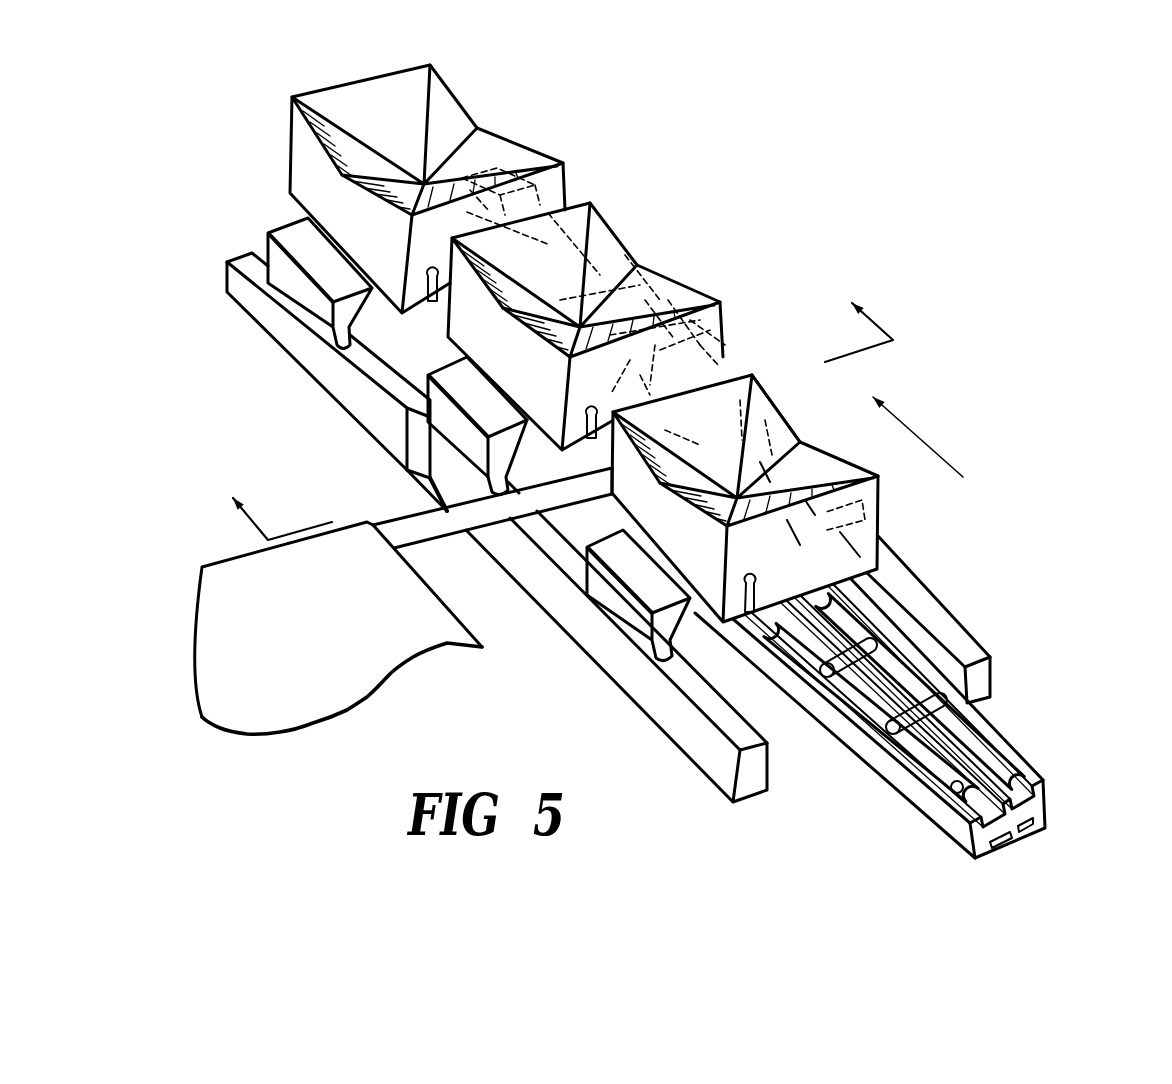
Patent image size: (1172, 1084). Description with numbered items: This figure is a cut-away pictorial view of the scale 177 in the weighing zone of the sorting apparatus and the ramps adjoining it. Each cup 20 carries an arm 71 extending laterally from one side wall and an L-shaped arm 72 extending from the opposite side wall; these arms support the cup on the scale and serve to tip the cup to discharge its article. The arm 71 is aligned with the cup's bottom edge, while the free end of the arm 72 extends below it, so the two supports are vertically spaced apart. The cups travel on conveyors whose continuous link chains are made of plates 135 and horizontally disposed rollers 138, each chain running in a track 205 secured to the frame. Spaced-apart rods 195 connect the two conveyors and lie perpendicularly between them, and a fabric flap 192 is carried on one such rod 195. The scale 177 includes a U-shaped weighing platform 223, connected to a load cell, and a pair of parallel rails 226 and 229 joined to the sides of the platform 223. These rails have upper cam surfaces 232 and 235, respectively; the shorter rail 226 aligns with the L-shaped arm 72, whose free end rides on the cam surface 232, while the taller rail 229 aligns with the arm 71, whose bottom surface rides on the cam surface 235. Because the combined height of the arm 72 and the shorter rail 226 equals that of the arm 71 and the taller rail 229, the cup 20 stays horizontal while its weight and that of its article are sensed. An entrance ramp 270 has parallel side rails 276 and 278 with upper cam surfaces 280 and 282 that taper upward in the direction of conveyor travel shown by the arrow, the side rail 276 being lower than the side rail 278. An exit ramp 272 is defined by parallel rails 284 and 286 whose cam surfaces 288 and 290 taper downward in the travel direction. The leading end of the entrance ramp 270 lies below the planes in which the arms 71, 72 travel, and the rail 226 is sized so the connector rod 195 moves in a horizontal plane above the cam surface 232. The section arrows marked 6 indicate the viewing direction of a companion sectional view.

The cup 20 is at (532, 82).
The arm 71 is at (727, 343).
The L-shaped arm 72 is at (453, 367).
The plates 135 is at (993, 728).
The rollers 138 is at (963, 697).
The scale 177 is at (453, 560).
The fabric flap 192 is at (320, 693).
The rod 195 is at (403, 537).
The track 205 is at (1070, 812).
The weighing platform 223 is at (428, 497).
The rail 226 is at (430, 457).
The rail 229 is at (763, 397).
The upper cam surface 232 is at (510, 477).
The upper cam surface 235 is at (752, 370).
The entrance ramp 270 is at (545, 728).
The exit ramp 272 is at (281, 348).
The side rail 276 is at (685, 733).
The side rail 278 is at (983, 668).
The upper cam surface 280 is at (667, 693).
The upper cam surface 282 is at (920, 595).
The rail 284 is at (273, 328).
The rail 286 is at (620, 228).
The cam surface 288 is at (372, 372).
The cam surface 290 is at (622, 238).
The section line of FIG. 6 is at (591, 409).